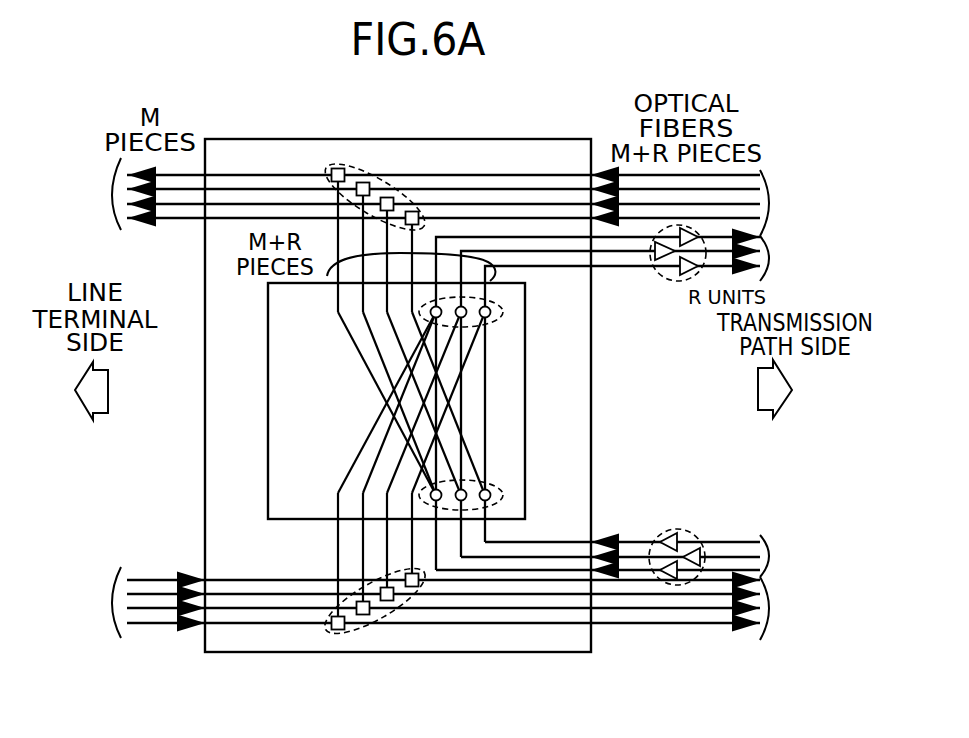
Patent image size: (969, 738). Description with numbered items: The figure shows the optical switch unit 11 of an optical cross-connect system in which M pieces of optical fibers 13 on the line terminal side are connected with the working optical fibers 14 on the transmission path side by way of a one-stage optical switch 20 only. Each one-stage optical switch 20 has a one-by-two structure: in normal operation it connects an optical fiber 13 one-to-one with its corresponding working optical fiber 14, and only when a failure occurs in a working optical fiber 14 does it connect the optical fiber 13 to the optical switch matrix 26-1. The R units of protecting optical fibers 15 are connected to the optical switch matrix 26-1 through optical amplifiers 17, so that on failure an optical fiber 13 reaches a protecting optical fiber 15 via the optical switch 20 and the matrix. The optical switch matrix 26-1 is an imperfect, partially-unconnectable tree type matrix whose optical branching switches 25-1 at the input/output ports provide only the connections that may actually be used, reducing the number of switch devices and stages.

The optical switch unit 11 is at (248, 139).
The optical fibers 13 is at (106, 192).
The working optical fibers 14 is at (778, 203).
The protecting optical fibers 15 is at (778, 258).
The optical amplifiers 17 is at (676, 282).
The one-stage optical switch 20 is at (357, 159).
The optical branching switch 25-1 is at (495, 316).
The optical switch matrix 26-1 is at (268, 385).